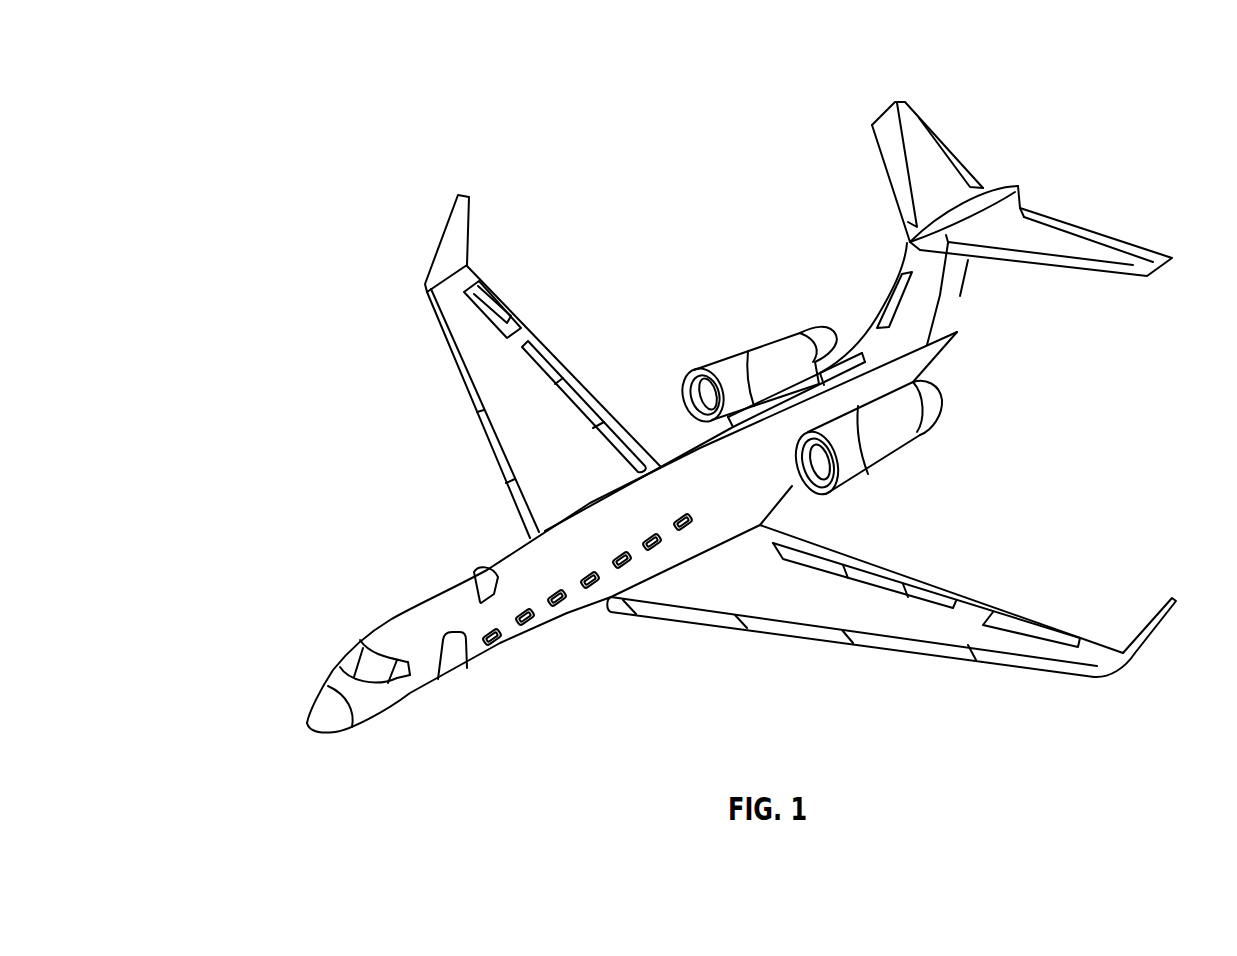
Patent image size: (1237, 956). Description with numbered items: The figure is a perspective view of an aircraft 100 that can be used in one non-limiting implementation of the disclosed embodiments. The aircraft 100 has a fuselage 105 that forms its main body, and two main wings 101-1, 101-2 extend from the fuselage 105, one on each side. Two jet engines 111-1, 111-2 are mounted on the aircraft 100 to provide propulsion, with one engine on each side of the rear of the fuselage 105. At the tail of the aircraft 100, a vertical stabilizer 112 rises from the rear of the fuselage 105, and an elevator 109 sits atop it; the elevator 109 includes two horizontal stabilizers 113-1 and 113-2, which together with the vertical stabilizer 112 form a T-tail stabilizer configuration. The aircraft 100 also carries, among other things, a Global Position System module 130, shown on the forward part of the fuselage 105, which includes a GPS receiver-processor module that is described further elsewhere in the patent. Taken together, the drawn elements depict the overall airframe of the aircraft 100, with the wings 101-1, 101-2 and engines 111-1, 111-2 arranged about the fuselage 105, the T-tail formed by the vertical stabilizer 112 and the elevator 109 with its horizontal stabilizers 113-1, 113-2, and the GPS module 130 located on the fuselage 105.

The aircraft 100 is at (250, 88).
The fuselage 105 is at (427, 613).
The Global Position System (GPS) module 130 is at (478, 582).
The main wing 101-1 is at (442, 292).
The main wing 101-2 is at (1077, 658).
The jet engine 111-1 is at (757, 340).
The jet engine 111-2 is at (896, 427).
The vertical stabilizer 112 is at (908, 258).
The horizontal stabilizer 113-1 is at (903, 153).
The horizontal stabilizer 113-2 is at (1132, 260).
The elevator 109 is at (1022, 202).